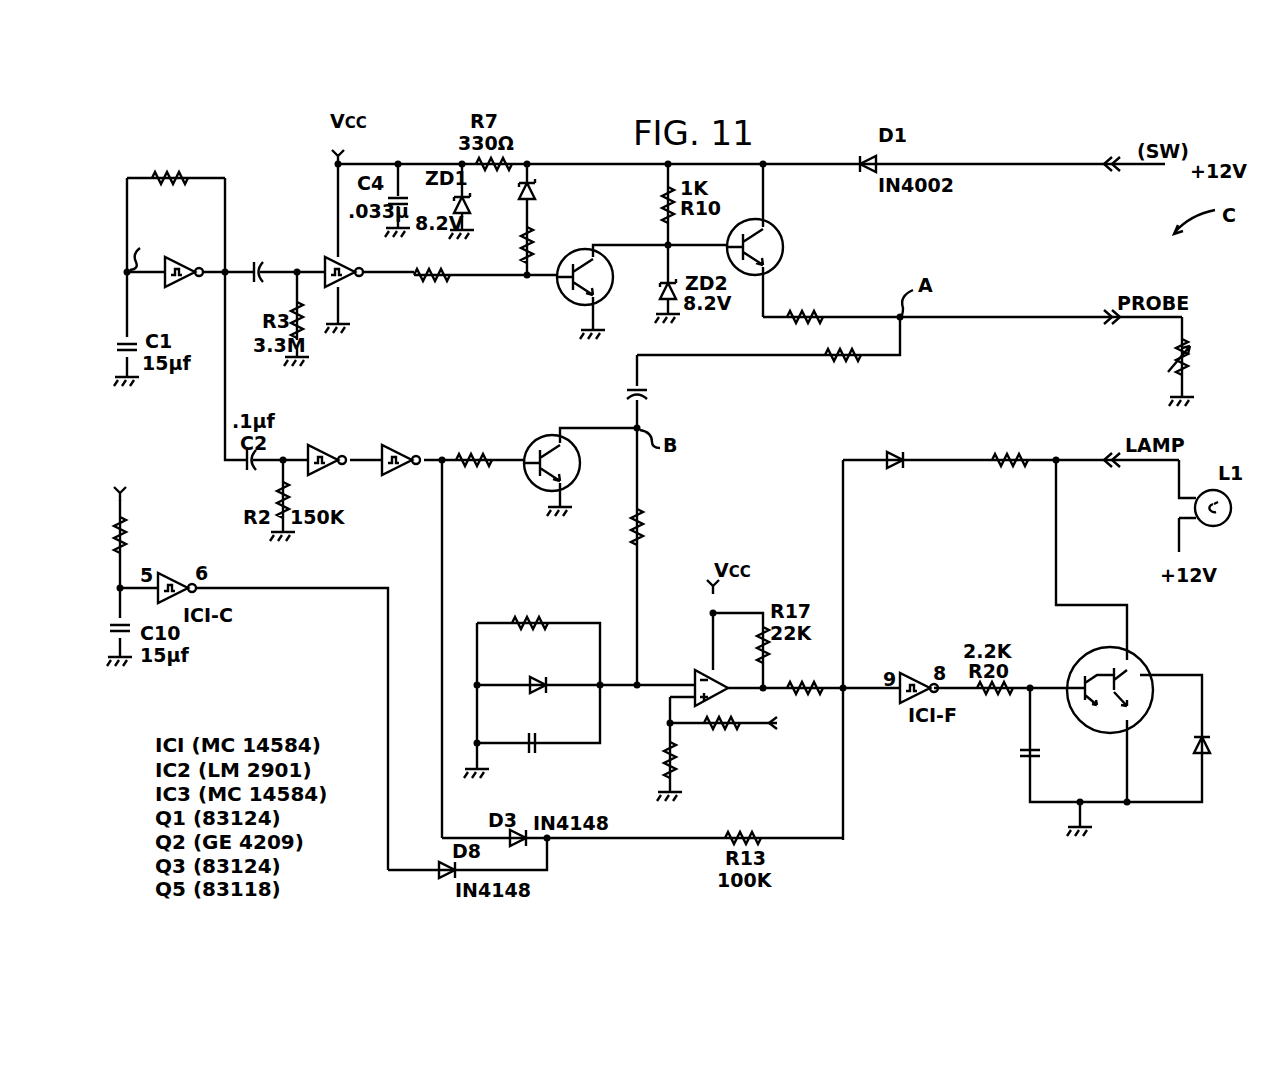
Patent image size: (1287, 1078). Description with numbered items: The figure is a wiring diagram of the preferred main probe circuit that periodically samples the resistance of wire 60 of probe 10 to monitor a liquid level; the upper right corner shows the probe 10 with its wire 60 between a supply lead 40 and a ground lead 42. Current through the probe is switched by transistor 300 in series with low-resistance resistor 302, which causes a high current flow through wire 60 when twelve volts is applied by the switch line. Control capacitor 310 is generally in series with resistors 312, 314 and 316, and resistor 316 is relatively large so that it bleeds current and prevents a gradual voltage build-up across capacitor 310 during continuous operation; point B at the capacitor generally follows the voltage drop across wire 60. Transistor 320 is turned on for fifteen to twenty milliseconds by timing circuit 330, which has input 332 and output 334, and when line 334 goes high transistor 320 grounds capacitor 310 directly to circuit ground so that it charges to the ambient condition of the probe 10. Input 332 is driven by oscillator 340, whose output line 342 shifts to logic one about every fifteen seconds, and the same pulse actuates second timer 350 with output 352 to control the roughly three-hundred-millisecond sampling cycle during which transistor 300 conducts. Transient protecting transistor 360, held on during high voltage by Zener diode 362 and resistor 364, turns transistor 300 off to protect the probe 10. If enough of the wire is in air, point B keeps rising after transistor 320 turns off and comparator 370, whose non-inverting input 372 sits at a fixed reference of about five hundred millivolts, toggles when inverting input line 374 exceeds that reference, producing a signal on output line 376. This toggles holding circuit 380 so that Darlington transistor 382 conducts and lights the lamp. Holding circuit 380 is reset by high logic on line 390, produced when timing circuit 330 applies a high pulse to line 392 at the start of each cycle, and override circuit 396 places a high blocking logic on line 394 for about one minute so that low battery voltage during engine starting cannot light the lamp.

The probe 10 is at (1204, 345).
The probe lead 40 is at (1190, 324).
The probe ground lead 42 is at (1184, 381).
The wire 60 is at (1175, 342).
The transistor 300 is at (778, 247).
The resistor 302 is at (798, 323).
The control capacitor 310 is at (627, 393).
The resistor 312 is at (851, 357).
The resistor 314 is at (639, 538).
The resistor 316 is at (525, 603).
The transistor 320 is at (544, 435).
The timing circuit 330 is at (363, 415).
The input 332 is at (222, 373).
The output 334 is at (448, 440).
The oscillator 340 is at (237, 197).
The output line 342 is at (232, 264).
The second timer 350 is at (404, 329).
The output 352 is at (474, 279).
The transient protecting transistor 360 is at (623, 286).
The Zener diode 362 is at (519, 181).
The resistor 364 is at (533, 238).
The comparator 370 is at (702, 669).
The non-inverting input 372 is at (670, 719).
The inverting input line 374 is at (664, 688).
The output line 376 is at (828, 680).
The holding circuit 380 is at (978, 435).
The Darlington transistor 382 is at (1136, 662).
The line 390 is at (846, 794).
The line 392 is at (441, 537).
The line 394 is at (388, 668).
The override circuit 396 is at (202, 531).